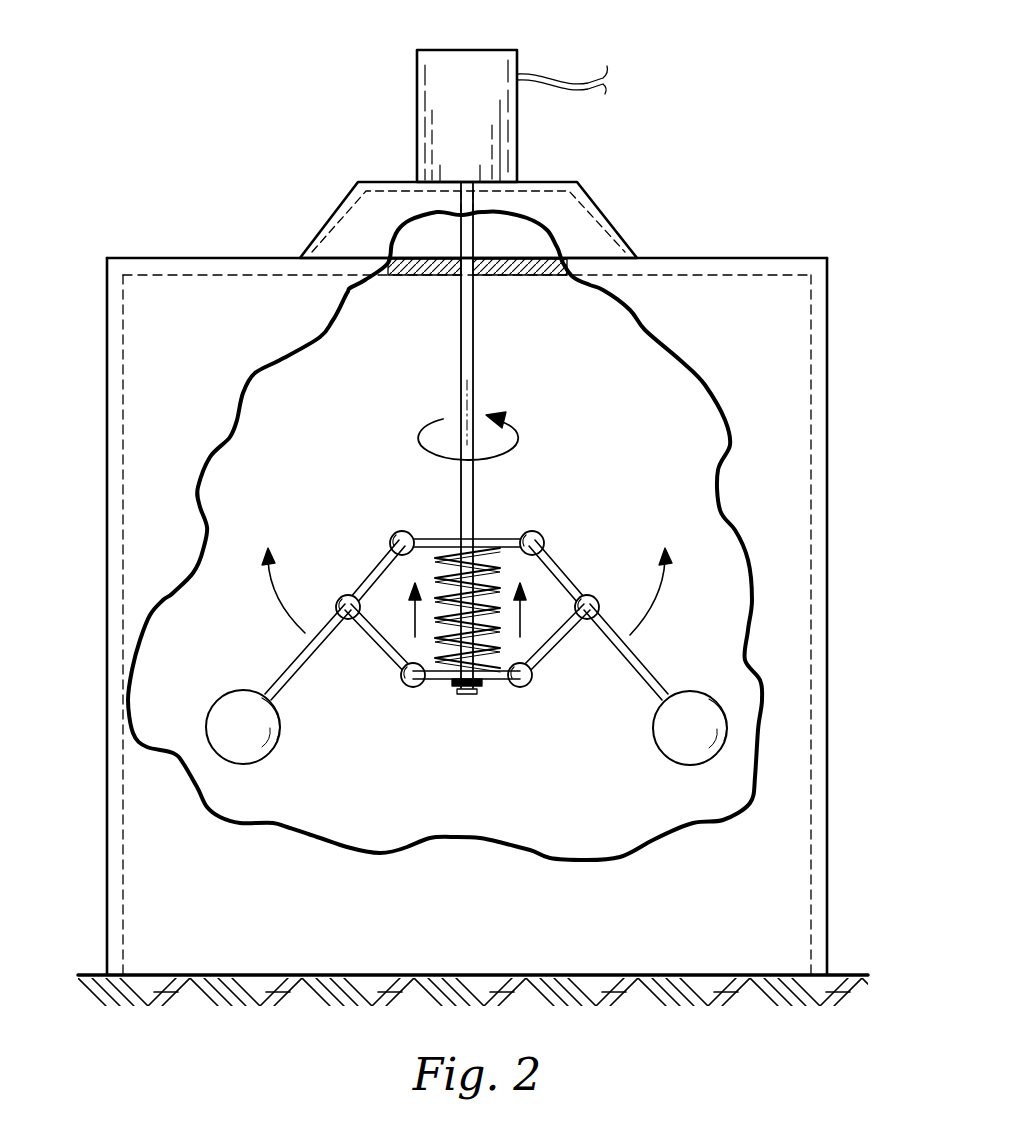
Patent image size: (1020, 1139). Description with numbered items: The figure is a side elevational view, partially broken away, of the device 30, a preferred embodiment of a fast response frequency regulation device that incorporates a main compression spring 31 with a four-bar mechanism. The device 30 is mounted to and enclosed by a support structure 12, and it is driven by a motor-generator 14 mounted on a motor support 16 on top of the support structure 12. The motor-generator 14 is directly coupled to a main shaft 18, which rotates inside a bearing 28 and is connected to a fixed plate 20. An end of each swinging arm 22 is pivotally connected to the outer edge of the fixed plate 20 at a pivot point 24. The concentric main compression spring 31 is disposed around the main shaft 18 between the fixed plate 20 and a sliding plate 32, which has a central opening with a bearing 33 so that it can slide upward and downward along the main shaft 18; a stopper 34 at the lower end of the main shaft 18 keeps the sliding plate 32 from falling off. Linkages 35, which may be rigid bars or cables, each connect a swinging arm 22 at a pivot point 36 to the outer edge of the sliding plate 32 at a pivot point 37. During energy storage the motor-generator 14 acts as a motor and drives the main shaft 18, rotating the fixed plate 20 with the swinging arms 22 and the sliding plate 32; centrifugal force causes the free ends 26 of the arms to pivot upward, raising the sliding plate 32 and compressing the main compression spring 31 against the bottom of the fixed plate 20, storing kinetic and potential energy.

The support structure 12 is at (829, 892).
The motor-generator 14 is at (417, 92).
The motor support 16 is at (340, 207).
The main shaft 18 is at (474, 393).
The fixed plate 20 is at (495, 540).
The swinging arm 22 is at (290, 672).
The pivot point 24 is at (398, 532).
The free end 26 is at (218, 702).
The bearing 28 is at (484, 262).
The device 30 is at (774, 76).
The main compression spring 31 is at (435, 578).
The sliding plate 32 is at (443, 682).
The bearing 33 is at (488, 684).
The stopper 34 is at (474, 697).
The linkage 35 is at (380, 655).
The pivot point 36 is at (340, 598).
The pivot point 37 is at (404, 688).